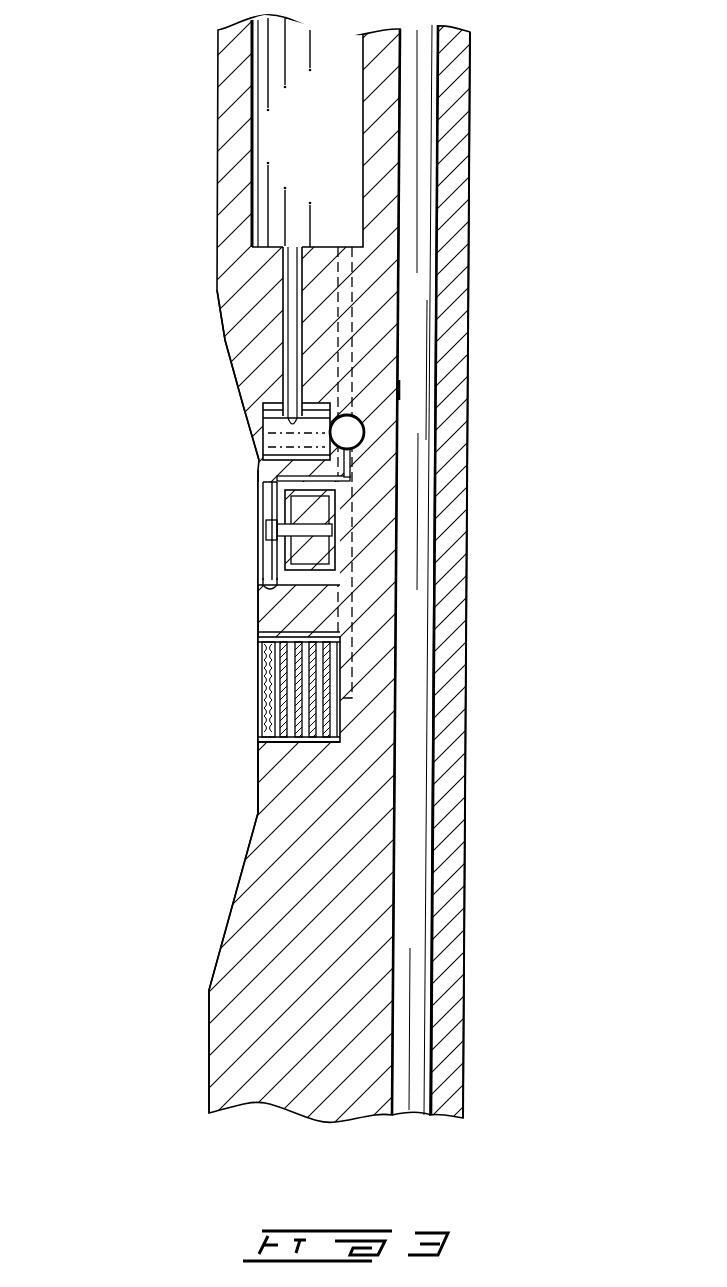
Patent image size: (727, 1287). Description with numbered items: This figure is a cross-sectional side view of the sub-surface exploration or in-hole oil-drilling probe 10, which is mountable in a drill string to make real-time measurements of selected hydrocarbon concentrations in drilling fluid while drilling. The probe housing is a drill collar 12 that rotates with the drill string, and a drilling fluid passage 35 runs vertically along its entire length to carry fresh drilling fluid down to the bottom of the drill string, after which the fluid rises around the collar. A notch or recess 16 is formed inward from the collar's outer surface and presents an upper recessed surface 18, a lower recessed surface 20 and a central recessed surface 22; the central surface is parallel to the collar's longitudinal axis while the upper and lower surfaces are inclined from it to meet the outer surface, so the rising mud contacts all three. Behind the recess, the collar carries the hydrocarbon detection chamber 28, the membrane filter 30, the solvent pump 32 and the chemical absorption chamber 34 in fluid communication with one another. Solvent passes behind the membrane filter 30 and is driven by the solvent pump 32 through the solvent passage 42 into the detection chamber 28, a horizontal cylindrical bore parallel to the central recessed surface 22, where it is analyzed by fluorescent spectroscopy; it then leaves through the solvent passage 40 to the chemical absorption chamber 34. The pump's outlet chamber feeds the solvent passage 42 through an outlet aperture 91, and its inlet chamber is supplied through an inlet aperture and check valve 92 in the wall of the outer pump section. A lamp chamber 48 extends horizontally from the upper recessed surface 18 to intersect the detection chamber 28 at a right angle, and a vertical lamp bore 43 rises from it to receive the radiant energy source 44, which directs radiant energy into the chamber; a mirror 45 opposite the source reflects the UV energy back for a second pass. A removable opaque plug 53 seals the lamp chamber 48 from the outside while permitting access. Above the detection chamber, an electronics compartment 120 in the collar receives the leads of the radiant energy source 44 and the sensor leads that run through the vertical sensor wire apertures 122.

The oil-drilling probe 10 is at (196, 178).
The drill collar 12 is at (474, 386).
The recess 16 is at (246, 600).
The upper recessed surface 18 is at (240, 372).
The lower recessed surface 20 is at (246, 862).
The central recessed surface 22 is at (256, 785).
The hydrocarbon detection chamber 28 is at (358, 437).
The membrane filter 30 is at (262, 692).
The solvent pump 32 is at (257, 522).
The chemical absorption chamber 34 is at (314, 752).
The drilling fluid passage 35 is at (418, 628).
The solvent passage 40 is at (347, 592).
The solvent passage 42 is at (352, 470).
The lamp bore 43 is at (288, 326).
The radiant energy source 44 is at (292, 298).
The mirror 45 is at (400, 393).
The lamp chamber 48 is at (287, 418).
The removable opaque plug 53 is at (262, 440).
The outlet aperture 91 is at (258, 475).
The check valve 92 is at (265, 581).
The electronics compartment 120 is at (268, 132).
The sensor wire apertures 122 is at (345, 298).